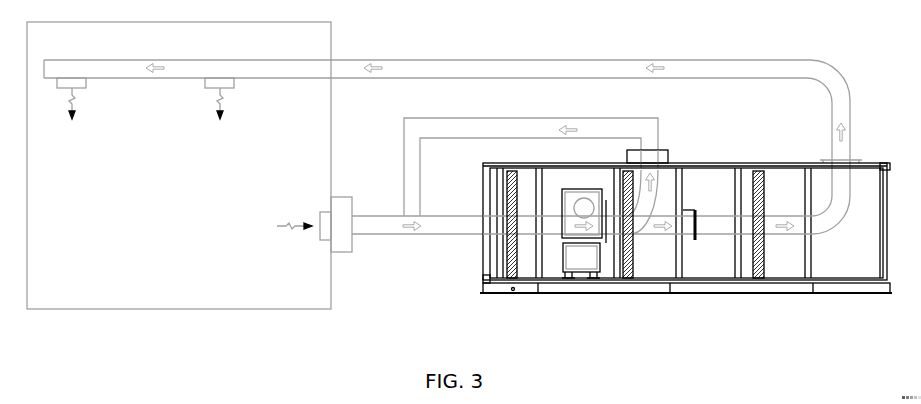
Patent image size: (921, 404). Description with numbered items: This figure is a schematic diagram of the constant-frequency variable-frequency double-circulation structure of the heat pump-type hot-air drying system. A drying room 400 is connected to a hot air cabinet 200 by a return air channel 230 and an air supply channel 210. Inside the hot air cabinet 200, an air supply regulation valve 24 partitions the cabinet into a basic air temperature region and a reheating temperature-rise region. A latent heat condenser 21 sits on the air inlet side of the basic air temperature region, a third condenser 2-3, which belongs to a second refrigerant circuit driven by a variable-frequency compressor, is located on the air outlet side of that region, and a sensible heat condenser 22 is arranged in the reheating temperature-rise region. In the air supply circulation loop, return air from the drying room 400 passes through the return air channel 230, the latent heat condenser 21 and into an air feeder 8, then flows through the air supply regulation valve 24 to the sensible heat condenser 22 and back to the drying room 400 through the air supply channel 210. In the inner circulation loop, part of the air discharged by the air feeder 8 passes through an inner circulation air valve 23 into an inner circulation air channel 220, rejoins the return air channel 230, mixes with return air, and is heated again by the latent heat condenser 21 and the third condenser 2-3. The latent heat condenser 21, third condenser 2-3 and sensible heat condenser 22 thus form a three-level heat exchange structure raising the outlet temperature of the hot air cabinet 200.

The drying room 400 is at (179, 165).
The air supply channel 210 is at (453, 131).
The inner circulation air channel 220 is at (531, 156).
The return air channel 230 is at (407, 219).
The inner circulation air valve 23 is at (663, 153).
The hot air cabinet 200 is at (686, 245).
The latent heat condenser 21 is at (523, 224).
The air feeder 8 is at (577, 228).
The third condenser 2-3 is at (646, 224).
The air supply regulation valve 24 is at (700, 214).
The sensible heat condenser 22 is at (774, 224).